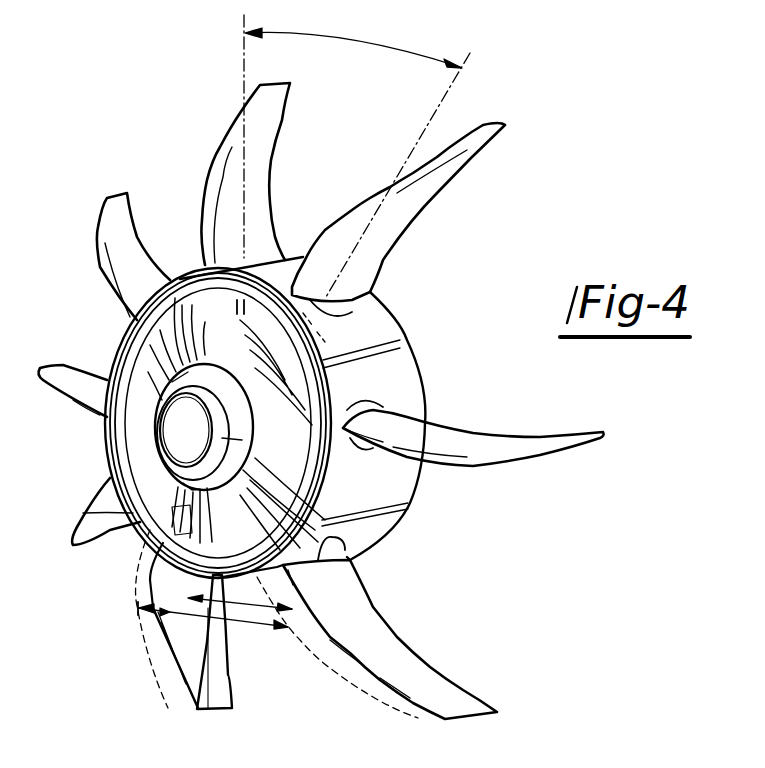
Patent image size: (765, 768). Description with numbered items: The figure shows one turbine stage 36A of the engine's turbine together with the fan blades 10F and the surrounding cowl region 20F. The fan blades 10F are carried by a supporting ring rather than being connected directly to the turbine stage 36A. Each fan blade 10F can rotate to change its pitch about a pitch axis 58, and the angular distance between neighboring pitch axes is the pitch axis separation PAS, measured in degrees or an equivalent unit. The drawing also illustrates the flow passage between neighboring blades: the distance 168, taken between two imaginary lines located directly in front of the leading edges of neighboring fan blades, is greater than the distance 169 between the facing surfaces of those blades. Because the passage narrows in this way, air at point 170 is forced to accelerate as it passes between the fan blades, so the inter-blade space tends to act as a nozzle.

The pitch axis 58 is at (244, 18).
The pitch axis separation PAS is at (334, 36).
The fan blades 10F is at (400, 236).
The cowl region 20F is at (386, 392).
The turbine stage 36A is at (178, 513).
The distance 168 is at (209, 712).
The distance 169 is at (242, 606).
The point 170 is at (158, 660).